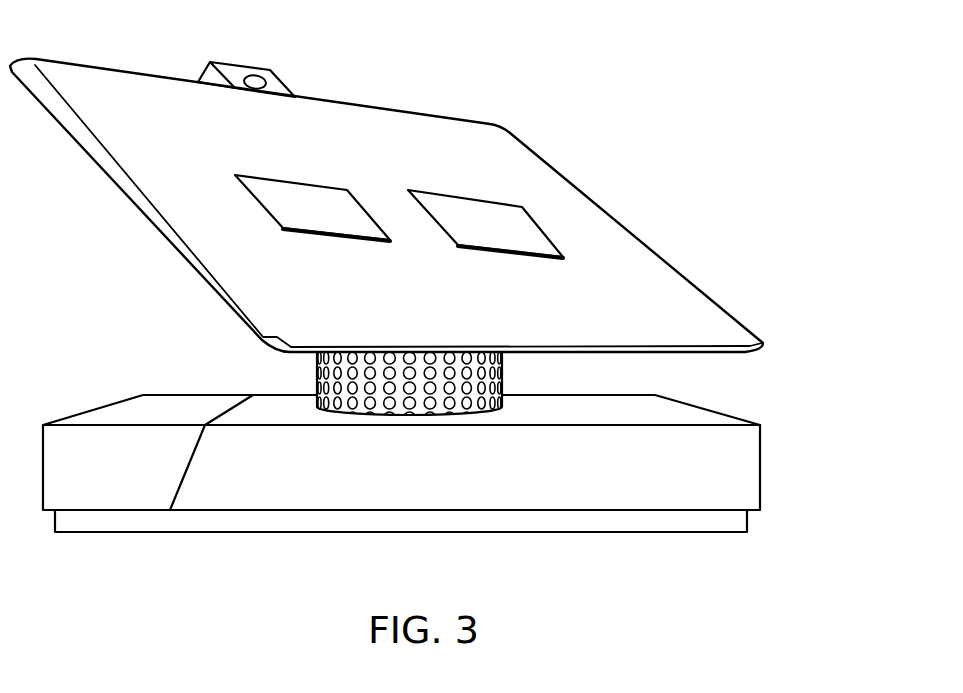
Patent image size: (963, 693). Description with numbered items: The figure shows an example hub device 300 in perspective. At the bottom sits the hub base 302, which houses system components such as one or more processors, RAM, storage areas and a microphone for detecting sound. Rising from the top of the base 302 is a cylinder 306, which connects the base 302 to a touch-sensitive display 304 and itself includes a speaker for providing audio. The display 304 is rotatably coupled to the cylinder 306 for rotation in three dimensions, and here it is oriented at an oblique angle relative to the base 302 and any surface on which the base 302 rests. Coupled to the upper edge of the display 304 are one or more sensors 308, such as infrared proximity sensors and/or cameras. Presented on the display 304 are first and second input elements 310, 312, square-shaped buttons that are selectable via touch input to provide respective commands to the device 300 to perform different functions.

The hub device 300 is at (794, 458).
The hub base 302 is at (400, 533).
The touch-sensitive display 304 is at (636, 233).
The cylinder 306 is at (503, 372).
The sensors 308 is at (239, 61).
The first input element 310 is at (290, 175).
The second input element 312 is at (463, 197).